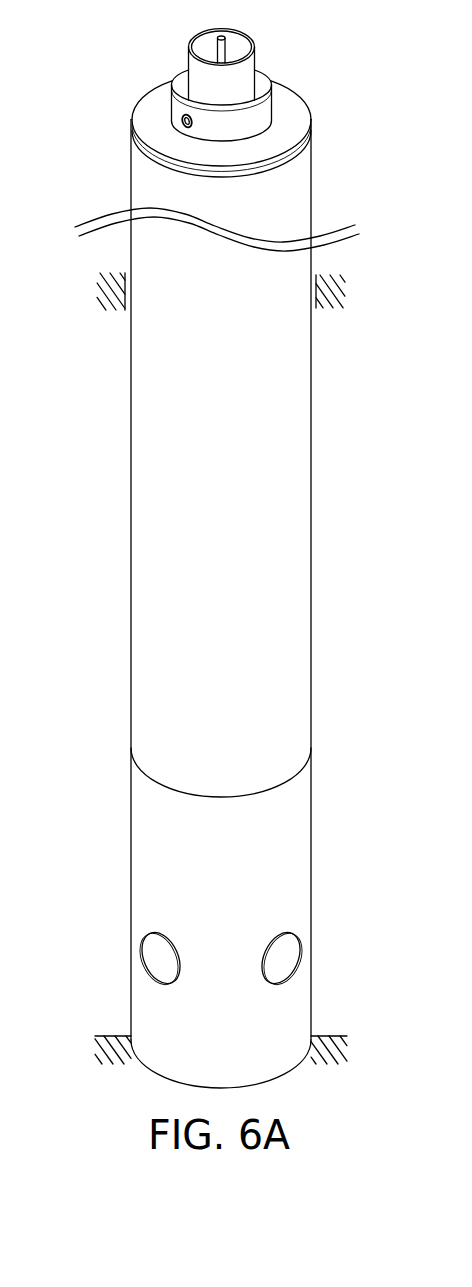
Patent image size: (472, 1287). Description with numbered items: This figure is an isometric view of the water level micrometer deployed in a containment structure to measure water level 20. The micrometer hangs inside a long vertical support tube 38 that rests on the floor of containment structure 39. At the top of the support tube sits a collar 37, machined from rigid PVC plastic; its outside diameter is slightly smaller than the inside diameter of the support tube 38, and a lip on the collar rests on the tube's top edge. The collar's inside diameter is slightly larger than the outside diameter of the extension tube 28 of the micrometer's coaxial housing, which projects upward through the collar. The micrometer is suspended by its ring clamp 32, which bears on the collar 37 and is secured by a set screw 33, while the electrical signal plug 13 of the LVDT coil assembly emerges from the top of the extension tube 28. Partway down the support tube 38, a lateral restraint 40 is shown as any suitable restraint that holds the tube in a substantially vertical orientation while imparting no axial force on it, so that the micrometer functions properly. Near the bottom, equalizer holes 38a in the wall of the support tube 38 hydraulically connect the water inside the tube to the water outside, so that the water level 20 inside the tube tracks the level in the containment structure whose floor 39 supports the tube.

The electrical signal plug 13 is at (218, 37).
The extension tube 28 is at (188, 63).
The ring clamp 32 is at (180, 82).
The set screw 33 is at (181, 124).
The collar 37 is at (152, 140).
The lateral restraint 40 is at (98, 293).
The support tube 38 is at (140, 517).
The water level 20 is at (157, 782).
The equalizer holes 38a is at (155, 958).
The floor of containment structure 39 is at (102, 1036).